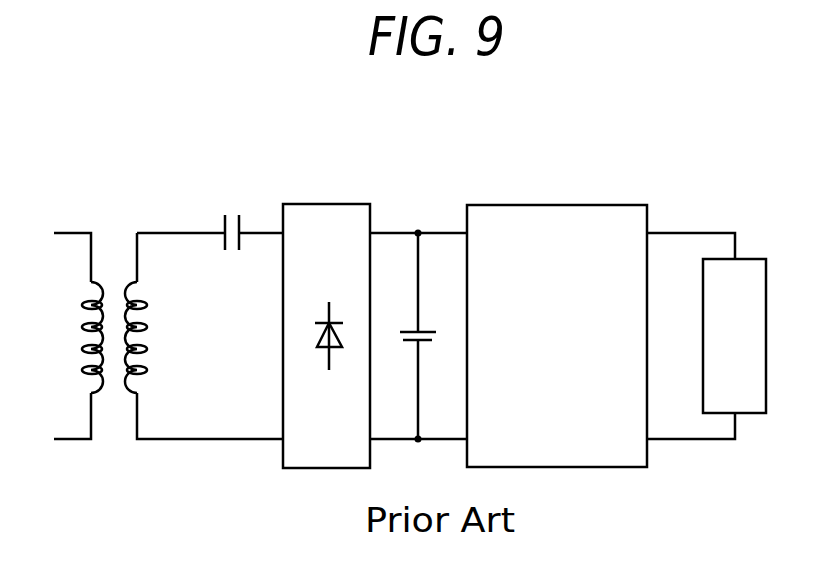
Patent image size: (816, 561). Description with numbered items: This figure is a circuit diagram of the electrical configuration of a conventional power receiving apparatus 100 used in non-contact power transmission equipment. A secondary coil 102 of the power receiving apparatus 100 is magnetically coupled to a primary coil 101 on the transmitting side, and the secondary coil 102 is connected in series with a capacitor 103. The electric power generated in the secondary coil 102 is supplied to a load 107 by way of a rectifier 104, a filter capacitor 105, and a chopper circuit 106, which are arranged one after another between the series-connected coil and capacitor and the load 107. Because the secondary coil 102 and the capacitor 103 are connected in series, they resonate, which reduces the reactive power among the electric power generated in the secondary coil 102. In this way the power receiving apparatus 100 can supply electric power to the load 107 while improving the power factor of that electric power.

The power receiving apparatus 100 is at (780, 142).
The primary coil 101 is at (88, 327).
The secondary coil 102 is at (134, 281).
The capacitor 103 is at (231, 214).
The rectifier 104 is at (324, 205).
The filter capacitor 105 is at (405, 325).
The chopper circuit 106 is at (550, 205).
The load 107 is at (749, 258).